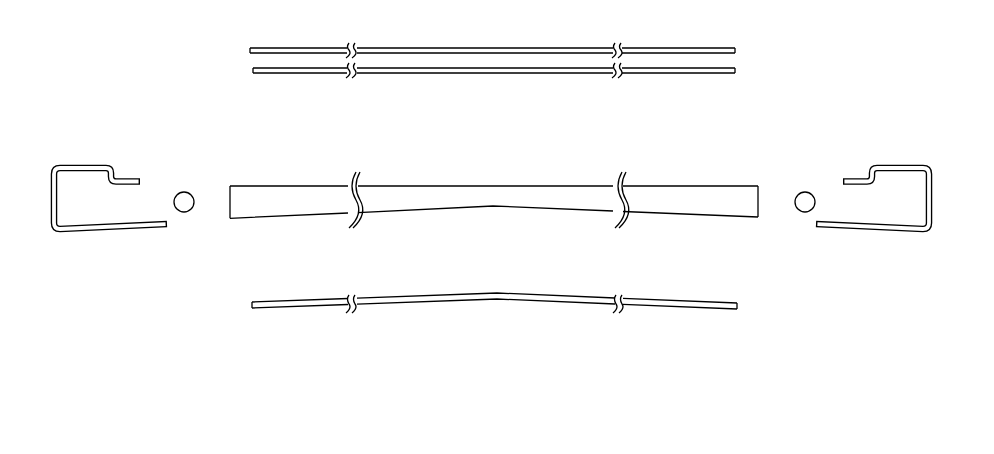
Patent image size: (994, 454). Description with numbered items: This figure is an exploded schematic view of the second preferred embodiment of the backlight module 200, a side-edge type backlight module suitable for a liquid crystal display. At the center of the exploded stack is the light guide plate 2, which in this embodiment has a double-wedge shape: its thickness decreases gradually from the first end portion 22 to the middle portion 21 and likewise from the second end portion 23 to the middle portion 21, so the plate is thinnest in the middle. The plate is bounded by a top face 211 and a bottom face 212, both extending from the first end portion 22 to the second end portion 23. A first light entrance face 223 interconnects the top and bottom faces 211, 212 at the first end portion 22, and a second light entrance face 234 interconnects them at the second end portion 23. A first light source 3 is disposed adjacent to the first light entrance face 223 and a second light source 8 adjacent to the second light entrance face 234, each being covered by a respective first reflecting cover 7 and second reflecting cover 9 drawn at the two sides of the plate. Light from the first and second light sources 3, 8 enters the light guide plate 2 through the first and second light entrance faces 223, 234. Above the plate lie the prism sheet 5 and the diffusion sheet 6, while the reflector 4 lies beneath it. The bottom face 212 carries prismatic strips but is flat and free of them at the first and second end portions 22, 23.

The backlight module 200 is at (859, 56).
The light guide plate 2 is at (779, 119).
The middle portion 21 is at (536, 162).
The first end portion 22 is at (325, 160).
The second end portion 23 is at (704, 162).
The top face 211 is at (474, 185).
The bottom face 212 is at (475, 210).
The first light entrance face 223 is at (228, 200).
The second light entrance face 234 is at (761, 202).
The first light source 3 is at (184, 202).
The second light source 8 is at (805, 202).
The reflector 4 is at (708, 310).
The prism sheet 5 is at (253, 70).
The diffusion sheet 6 is at (267, 48).
The first reflecting cover 7 is at (83, 164).
The second reflecting cover 9 is at (897, 163).